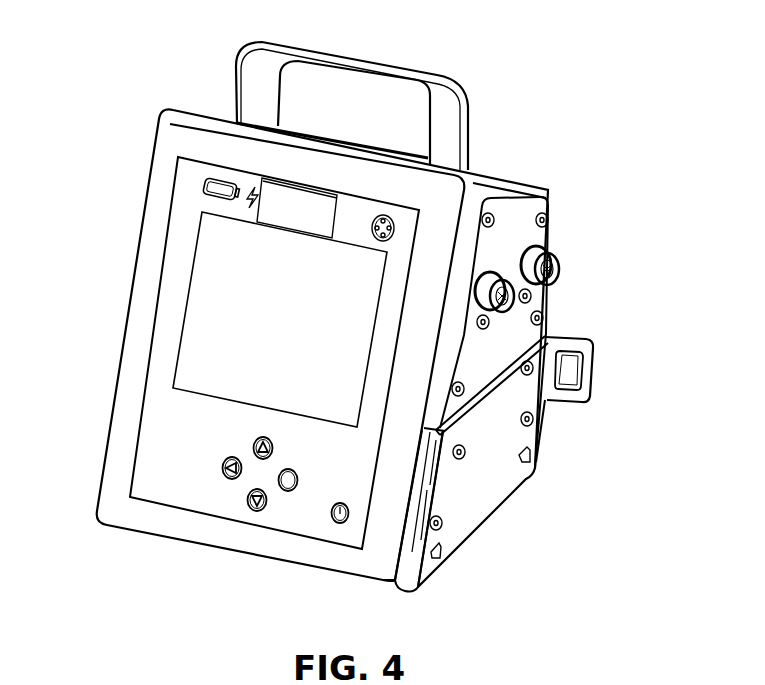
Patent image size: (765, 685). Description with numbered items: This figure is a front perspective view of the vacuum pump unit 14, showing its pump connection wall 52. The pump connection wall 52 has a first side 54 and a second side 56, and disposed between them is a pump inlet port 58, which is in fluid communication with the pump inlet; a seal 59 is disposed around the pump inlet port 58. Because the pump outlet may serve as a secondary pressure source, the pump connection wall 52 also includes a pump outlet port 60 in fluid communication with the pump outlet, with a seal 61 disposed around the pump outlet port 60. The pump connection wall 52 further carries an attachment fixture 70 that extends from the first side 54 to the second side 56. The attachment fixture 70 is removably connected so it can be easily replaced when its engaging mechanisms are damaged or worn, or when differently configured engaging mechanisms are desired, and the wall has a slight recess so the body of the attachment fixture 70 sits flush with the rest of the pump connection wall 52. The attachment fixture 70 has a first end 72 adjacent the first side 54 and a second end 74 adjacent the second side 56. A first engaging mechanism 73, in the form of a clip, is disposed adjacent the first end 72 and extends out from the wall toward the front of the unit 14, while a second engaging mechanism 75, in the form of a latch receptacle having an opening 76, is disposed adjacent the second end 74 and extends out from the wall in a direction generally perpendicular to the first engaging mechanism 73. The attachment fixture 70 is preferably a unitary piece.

The vacuum pump unit 14 is at (160, 78).
The pump connection wall 52 is at (447, 502).
The first side 54 is at (411, 543).
The second side 56 is at (539, 448).
The pump inlet port 58 is at (512, 296).
The seal 59 is at (508, 283).
The pump outlet port 60 is at (552, 268).
The seal 61 is at (548, 248).
The attachment fixture 70 is at (492, 412).
The first end 72 is at (415, 473).
The first engaging mechanism 73 is at (424, 515).
The second end 74 is at (543, 387).
The second engaging mechanism 75 is at (597, 367).
The opening 76 is at (572, 373).